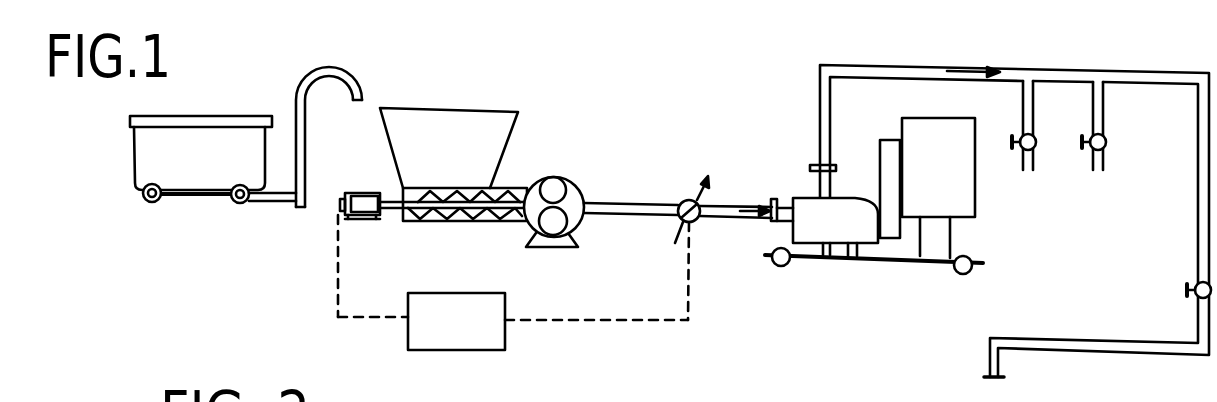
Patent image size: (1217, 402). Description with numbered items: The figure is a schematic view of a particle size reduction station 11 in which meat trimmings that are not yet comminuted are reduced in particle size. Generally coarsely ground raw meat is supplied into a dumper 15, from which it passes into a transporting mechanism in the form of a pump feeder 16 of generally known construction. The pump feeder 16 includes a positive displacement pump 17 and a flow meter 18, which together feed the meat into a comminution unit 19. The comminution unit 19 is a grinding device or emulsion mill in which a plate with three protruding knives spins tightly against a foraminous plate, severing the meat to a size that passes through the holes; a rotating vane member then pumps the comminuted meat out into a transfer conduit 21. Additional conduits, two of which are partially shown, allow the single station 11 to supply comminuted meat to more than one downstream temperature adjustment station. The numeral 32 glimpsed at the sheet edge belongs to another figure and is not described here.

In FIG. 1, the particle size reduction station 11 is at (610, 123).
In FIG. 1, the dumper 15 is at (206, 170).
In FIG. 1, the pump feeder 16 is at (483, 215).
In FIG. 1, the positive displacement pump 17 is at (575, 180).
In FIG. 1, the flow meter 18 is at (682, 203).
In FIG. 1, the comminution unit 19 is at (957, 190).
In FIG. 1, the transfer conduit 21 is at (1075, 345).
In FIG. 2, the component of FIG. 2 32 is at (758, 401).